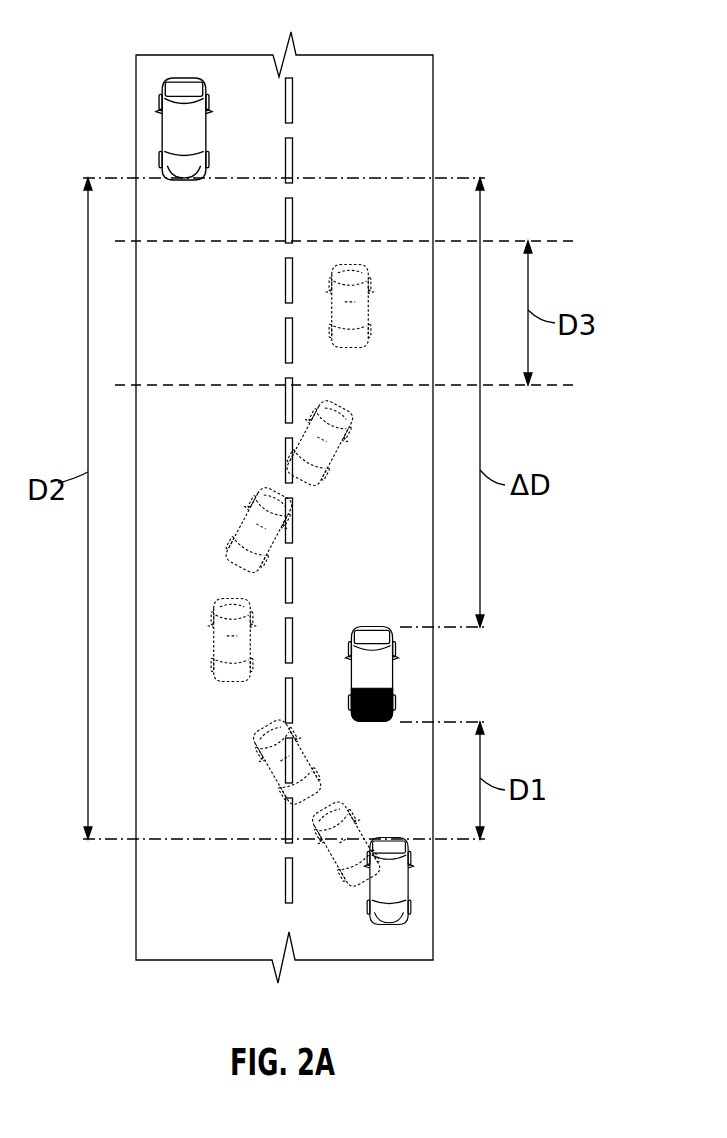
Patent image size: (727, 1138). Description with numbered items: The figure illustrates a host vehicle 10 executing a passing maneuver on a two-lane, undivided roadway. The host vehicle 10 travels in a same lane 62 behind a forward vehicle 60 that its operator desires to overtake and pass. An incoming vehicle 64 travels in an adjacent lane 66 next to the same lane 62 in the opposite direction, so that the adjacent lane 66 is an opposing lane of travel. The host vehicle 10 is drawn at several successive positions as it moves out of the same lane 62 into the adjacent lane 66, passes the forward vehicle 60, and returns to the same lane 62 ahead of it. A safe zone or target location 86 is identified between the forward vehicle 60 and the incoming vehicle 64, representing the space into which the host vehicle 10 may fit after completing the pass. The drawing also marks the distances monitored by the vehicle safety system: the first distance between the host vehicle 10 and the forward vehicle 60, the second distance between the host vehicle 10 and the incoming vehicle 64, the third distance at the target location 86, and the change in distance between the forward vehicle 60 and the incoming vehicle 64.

The host vehicle 10 is at (408, 925).
The forward vehicle 60 is at (398, 692).
The same lane 62 is at (366, 80).
The incoming vehicle 64 is at (160, 76).
The adjacent lane 66 is at (198, 932).
The target location 86 is at (396, 310).